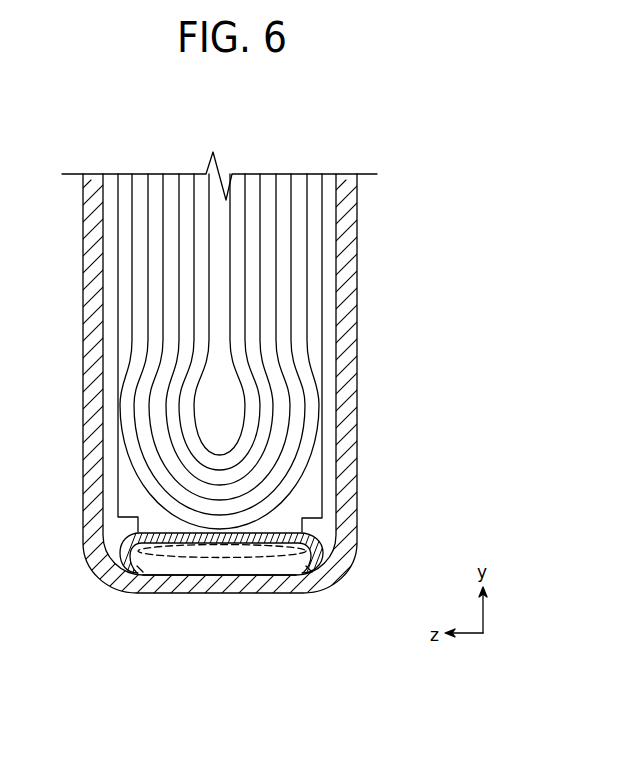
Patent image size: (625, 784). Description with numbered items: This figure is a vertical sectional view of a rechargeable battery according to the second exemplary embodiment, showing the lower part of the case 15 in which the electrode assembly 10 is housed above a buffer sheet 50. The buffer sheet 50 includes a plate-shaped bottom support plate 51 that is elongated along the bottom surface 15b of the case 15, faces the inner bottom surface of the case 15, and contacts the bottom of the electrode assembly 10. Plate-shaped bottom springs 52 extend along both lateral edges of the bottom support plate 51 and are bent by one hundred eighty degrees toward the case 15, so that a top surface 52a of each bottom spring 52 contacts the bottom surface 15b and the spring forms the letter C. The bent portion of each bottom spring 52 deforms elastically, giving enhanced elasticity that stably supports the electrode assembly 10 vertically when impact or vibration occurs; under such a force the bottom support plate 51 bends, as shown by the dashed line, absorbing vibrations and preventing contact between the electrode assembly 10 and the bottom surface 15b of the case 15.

The electrode assembly 10 is at (307, 293).
The case 15 is at (343, 350).
The bottom surface of the case 15b is at (252, 606).
The buffer sheet 50 is at (178, 541).
The bottom support plate 51 is at (212, 546).
The bottom spring 52 is at (300, 606).
The top surface of the bottom spring 52a is at (301, 578).